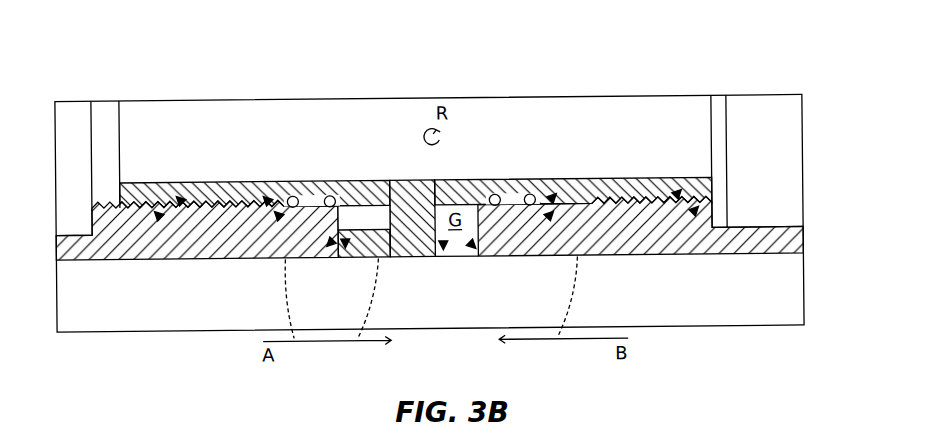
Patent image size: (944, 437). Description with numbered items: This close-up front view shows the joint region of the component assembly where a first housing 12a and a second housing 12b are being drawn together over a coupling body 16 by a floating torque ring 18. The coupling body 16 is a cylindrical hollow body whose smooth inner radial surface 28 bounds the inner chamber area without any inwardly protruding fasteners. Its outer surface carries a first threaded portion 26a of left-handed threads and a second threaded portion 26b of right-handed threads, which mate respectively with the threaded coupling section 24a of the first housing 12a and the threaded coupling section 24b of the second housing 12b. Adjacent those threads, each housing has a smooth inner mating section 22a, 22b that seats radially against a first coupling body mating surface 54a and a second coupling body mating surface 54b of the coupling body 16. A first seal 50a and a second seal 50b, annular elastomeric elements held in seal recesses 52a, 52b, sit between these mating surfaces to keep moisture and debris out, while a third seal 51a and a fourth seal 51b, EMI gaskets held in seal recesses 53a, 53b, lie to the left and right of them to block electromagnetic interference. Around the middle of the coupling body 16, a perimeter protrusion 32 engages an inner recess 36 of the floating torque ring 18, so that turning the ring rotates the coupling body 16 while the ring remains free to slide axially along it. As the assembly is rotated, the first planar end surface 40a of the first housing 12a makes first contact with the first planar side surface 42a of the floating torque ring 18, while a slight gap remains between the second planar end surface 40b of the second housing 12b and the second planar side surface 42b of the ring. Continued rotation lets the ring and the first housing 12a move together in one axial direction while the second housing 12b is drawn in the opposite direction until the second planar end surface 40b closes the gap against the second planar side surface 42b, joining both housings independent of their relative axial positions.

The coupling body 16 is at (678, 112).
The inner radial surface 28 is at (620, 134).
The first housing 12a is at (200, 238).
The second housing 12b is at (620, 245).
The floating torque ring 18 is at (390, 257).
The inner mating section 22a is at (267, 194).
The inner mating section 22b is at (553, 188).
The threaded coupling section 24a is at (186, 180).
The threaded coupling section 24b is at (672, 195).
The first threaded portion 26a is at (157, 220).
The second threaded portion 26b is at (700, 213).
The perimeter protrusion 32 is at (417, 257).
The inner recess 36 is at (392, 213).
The first planar end surface 40a is at (350, 257).
The second planar end surface 40b is at (472, 255).
The first planar side surface 42a is at (323, 256).
The second planar side surface 42b is at (447, 253).
The first seal 50a is at (330, 192).
The second seal 50b is at (495, 191).
The third seal 51a is at (288, 196).
The fourth seal 51b is at (520, 191).
The seal recess 52a is at (340, 189).
The seal recess 52b is at (480, 188).
The seal recess 53a is at (293, 192).
The seal recess 53b is at (533, 188).
The first coupling body mating surface 54a is at (257, 245).
The second coupling body mating surface 54b is at (520, 254).